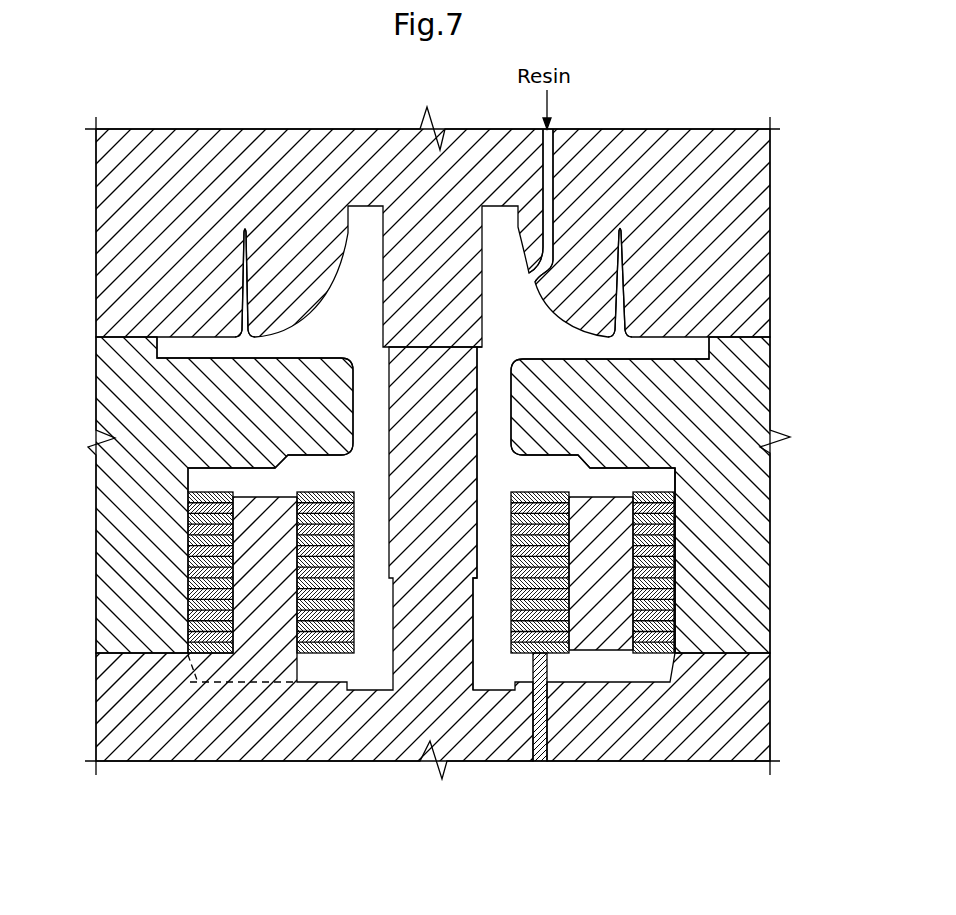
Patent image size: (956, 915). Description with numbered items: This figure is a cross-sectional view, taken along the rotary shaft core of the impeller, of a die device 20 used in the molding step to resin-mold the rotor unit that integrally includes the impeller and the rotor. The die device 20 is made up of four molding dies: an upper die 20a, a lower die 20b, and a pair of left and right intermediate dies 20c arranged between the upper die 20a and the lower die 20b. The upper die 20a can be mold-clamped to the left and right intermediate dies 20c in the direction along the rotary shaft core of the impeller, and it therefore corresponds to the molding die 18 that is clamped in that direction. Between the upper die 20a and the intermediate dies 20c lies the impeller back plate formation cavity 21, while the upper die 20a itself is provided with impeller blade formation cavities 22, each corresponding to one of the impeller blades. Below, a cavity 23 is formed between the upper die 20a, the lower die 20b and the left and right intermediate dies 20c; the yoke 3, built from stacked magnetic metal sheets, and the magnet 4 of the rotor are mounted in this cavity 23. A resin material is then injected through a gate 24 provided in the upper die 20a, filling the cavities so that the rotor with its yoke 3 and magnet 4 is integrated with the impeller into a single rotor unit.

The die device 20 is at (168, 116).
The upper die 20a is at (343, 132).
The molding die 18 is at (478, 445).
The lower die 20b is at (104, 697).
The intermediate dies 20c is at (104, 511).
The impeller back plate formation cavity 21 is at (181, 355).
The impeller blade formation cavities 22 is at (244, 297).
The cavity 23 is at (492, 407).
The gate 24 is at (548, 182).
The yoke 3 is at (677, 558).
The magnet 4 is at (273, 501).